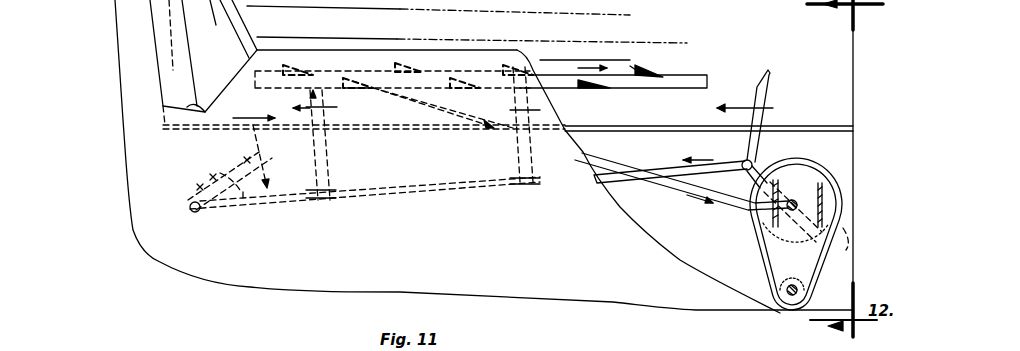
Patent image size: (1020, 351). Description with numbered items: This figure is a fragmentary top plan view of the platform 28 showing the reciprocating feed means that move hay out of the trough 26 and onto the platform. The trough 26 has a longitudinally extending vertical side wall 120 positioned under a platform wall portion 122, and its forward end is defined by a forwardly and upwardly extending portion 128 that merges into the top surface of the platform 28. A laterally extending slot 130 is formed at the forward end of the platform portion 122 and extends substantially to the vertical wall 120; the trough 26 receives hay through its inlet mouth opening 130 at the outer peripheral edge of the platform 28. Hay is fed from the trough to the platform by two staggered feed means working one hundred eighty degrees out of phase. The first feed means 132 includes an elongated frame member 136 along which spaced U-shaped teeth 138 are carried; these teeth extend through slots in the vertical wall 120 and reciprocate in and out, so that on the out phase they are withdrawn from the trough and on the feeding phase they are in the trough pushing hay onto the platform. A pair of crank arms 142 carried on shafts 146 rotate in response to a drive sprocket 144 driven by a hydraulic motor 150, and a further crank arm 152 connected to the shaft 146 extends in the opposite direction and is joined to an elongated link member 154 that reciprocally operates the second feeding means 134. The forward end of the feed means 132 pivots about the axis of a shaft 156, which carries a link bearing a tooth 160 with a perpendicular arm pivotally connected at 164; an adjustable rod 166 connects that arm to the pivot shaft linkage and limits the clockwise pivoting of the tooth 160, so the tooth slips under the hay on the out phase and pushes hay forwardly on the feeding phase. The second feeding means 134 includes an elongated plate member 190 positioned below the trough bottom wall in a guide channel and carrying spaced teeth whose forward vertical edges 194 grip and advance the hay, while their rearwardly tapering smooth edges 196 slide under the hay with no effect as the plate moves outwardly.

The platform 28 is at (138, 19).
The forwardly and upwardly extending portion 128 is at (204, 27).
The inlet mouth opening 130 is at (187, 107).
The platform wall portion 122 is at (347, 57).
The horizontally oriented feed means 134 is at (640, 62).
The elongated plate member 190 is at (690, 78).
The forward vertical edges 194 is at (635, 68).
The rearwardly tapering smooth edges 196 is at (660, 75).
The U-shaped teeth 138 is at (528, 120).
The vertical feed means 132 is at (367, 202).
The elongated frame member 136 is at (453, 188).
The tooth 160 is at (247, 140).
The adjustable rod 166 is at (227, 162).
The pivot connection 164 is at (265, 155).
The pivot shaft 156 is at (243, 200).
The elongated link member 154 is at (617, 153).
The crank arms 142 is at (750, 192).
The vertical side wall 120 is at (798, 130).
The drive sprocket 144 is at (780, 237).
The shafts 146 is at (797, 203).
The hydraulic motor 150 is at (778, 298).
The crank arm 152 is at (846, 250).
The trough 26 is at (606, 344).